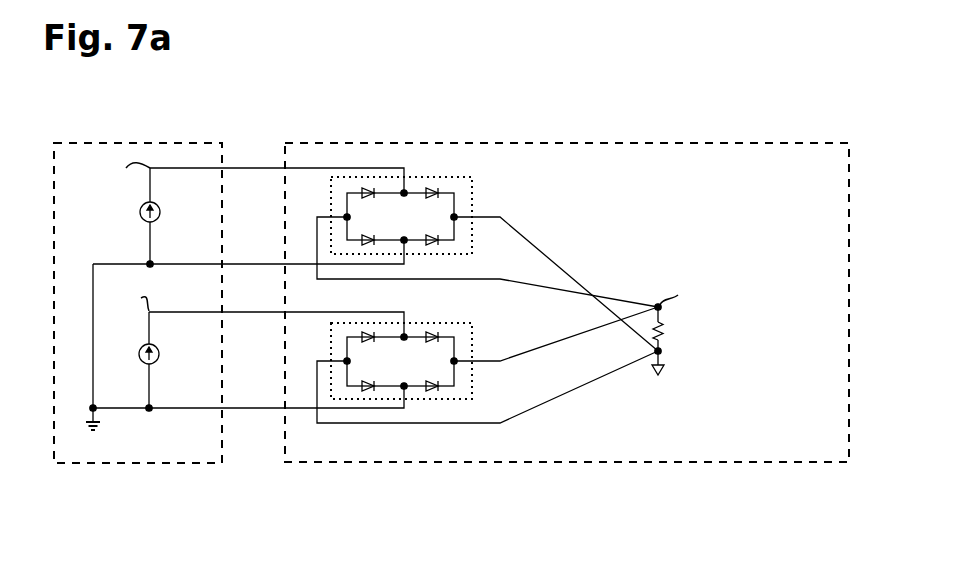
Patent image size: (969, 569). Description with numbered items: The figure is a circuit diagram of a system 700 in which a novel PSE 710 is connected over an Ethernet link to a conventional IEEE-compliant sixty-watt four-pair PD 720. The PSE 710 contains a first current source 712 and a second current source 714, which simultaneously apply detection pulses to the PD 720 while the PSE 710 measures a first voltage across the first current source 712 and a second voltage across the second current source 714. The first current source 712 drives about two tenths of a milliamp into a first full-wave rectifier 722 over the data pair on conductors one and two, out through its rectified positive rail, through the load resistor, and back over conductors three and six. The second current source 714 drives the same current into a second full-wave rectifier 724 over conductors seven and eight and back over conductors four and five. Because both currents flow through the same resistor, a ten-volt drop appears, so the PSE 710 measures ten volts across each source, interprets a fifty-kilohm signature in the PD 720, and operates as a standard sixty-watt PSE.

The system 700 is at (651, 137).
The PSE 710 is at (220, 143).
The first current source 712 is at (140, 210).
The second current source 714 is at (160, 350).
The PD 720 is at (445, 143).
The first full-wave rectifier 722 is at (472, 181).
The second full-wave rectifier 724 is at (474, 326).